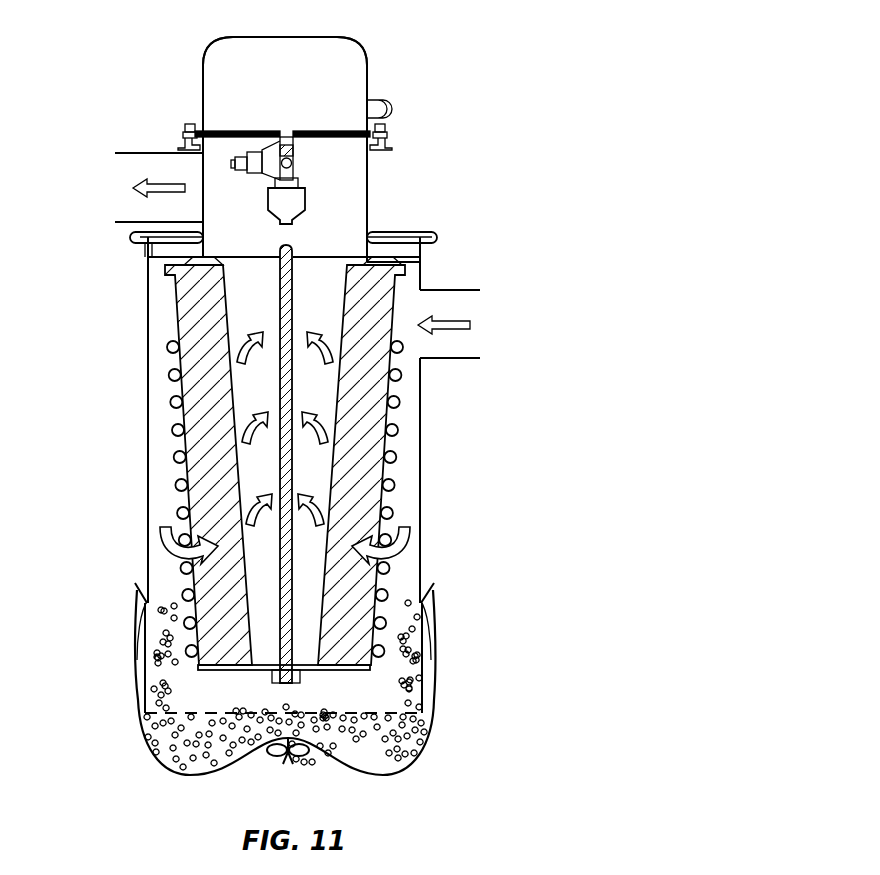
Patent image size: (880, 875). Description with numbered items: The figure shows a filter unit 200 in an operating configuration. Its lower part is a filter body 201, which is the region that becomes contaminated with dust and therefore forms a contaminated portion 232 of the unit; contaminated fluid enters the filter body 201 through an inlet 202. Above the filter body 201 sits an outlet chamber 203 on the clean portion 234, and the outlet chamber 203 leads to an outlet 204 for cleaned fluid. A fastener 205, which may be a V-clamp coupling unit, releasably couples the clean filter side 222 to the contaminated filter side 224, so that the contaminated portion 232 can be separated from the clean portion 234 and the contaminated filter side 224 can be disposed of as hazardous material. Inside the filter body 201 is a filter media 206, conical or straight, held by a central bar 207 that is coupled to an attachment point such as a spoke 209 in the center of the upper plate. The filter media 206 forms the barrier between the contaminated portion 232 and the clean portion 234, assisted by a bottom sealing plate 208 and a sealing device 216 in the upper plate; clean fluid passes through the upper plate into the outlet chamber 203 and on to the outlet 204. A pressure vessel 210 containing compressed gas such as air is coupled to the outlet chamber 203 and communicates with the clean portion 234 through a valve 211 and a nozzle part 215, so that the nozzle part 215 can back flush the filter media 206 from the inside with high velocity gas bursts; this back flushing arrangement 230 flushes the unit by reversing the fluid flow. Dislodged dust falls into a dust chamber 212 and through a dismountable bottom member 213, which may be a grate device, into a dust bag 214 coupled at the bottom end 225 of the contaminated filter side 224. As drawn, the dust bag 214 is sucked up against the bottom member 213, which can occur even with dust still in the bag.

The filter unit 200 is at (572, 29).
The filter body 201 is at (421, 558).
The inlet 202 is at (480, 301).
The outlet chamber 203 is at (369, 198).
The outlet 204 is at (118, 181).
The fastener 205 is at (437, 238).
The filter media 206 is at (401, 508).
The central bar 207 is at (280, 628).
The bottom sealing plate 208 is at (225, 668).
The spoke 209 is at (250, 265).
The pressure vessel 210 is at (330, 55).
The valve 211 is at (270, 184).
The dust chamber 212 is at (419, 713).
The bottom member 213 is at (413, 758).
The dust bag 214 is at (161, 757).
The nozzle part 215 is at (290, 203).
The sealing device 216 is at (421, 262).
The clean filter side 222 is at (405, 98).
The contaminated filter side 224 is at (142, 252).
The bottom end 225 is at (429, 628).
The back flushing arrangement 230 is at (305, 177).
The contaminated portion 232 is at (403, 473).
The clean portion 234 is at (322, 385).